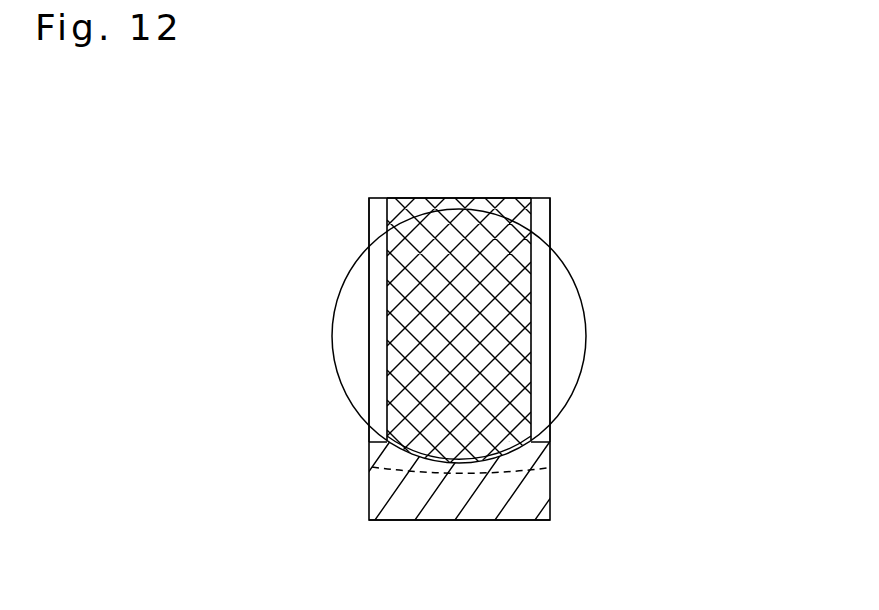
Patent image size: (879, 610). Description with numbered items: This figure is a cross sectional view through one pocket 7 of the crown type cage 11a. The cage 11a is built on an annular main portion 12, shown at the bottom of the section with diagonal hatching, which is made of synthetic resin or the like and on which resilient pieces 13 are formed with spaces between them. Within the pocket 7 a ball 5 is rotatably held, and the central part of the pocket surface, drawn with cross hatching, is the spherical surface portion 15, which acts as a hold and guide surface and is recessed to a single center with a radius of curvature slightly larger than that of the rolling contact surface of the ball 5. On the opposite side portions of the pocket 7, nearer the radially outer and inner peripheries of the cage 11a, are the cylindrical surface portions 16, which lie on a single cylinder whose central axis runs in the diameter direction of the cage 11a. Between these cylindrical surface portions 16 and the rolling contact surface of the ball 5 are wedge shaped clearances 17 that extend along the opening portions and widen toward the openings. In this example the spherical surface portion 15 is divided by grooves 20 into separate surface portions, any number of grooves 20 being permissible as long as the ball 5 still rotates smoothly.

The cage 11a is at (559, 208).
The resilient piece 13 is at (438, 198).
The spherical surface portion 15 is at (527, 283).
The pocket 7 is at (368, 283).
The ball 5 is at (583, 328).
The cylindrical surface portion 16 is at (373, 357).
The wedge shaped clearance 17 is at (375, 437).
The groove 20 is at (375, 461).
The main portion 12 is at (537, 487).